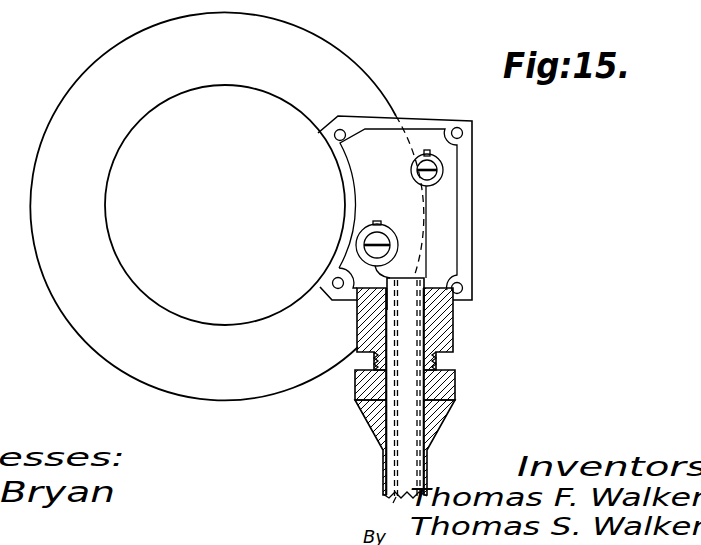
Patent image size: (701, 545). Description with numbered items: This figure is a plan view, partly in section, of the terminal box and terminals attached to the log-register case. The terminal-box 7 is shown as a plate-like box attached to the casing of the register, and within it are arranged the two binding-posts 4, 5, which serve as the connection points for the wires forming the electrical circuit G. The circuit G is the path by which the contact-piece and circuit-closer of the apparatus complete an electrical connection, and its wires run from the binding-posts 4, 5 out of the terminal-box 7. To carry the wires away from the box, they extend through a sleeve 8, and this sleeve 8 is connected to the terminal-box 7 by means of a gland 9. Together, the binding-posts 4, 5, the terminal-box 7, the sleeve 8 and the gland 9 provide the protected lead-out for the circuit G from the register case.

The binding-post 4 is at (437, 168).
The binding-post 5 is at (378, 233).
The terminal-box 7 is at (473, 195).
The sleeve 8 is at (425, 458).
The gland 9 is at (450, 385).
The circuit G is at (400, 272).